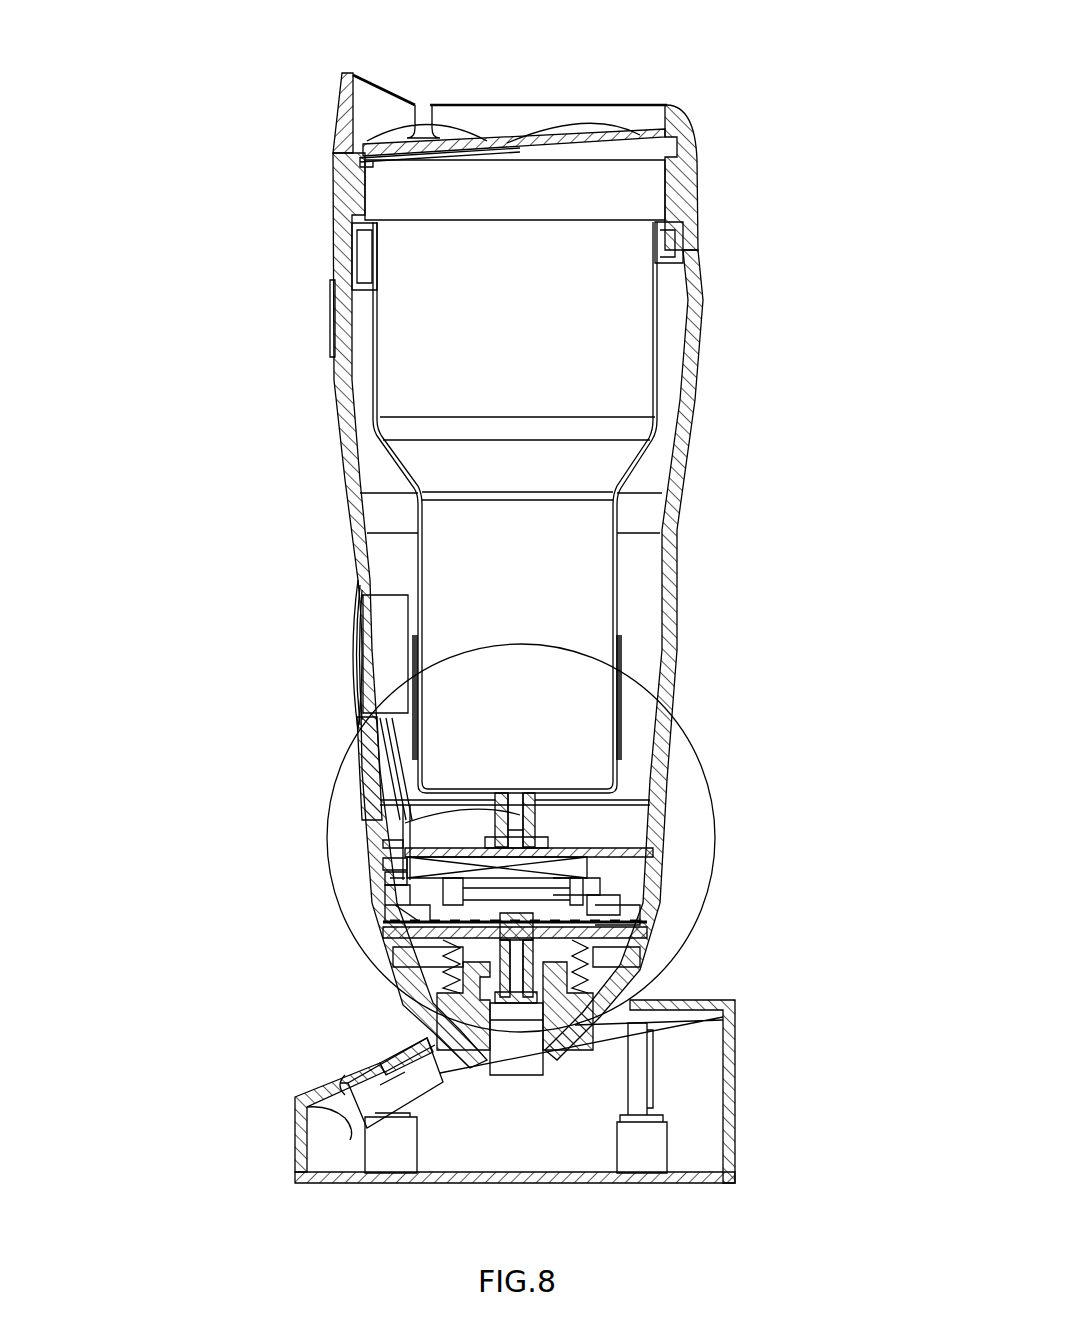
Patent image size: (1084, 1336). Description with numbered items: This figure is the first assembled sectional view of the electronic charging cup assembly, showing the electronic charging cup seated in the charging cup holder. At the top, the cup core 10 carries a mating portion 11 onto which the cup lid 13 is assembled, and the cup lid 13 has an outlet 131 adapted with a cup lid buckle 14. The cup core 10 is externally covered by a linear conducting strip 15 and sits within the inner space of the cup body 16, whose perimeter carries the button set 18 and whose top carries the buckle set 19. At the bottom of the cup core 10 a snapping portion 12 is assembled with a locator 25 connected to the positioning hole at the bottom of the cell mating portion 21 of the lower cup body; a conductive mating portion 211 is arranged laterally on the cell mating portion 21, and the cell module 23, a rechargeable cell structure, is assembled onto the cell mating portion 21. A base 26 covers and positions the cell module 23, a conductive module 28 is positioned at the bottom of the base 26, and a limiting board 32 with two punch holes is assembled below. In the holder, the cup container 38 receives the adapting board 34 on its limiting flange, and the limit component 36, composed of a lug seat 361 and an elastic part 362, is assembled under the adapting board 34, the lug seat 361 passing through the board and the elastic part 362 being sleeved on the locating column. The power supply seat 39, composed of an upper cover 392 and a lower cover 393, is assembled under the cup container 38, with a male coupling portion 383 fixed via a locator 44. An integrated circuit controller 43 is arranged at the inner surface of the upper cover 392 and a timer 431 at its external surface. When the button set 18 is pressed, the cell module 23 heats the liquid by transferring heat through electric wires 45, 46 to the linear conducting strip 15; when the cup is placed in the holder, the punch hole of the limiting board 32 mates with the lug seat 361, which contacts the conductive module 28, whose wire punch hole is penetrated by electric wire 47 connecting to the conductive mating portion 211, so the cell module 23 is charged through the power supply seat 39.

The cup core 10 is at (658, 298).
The mating portion 11 is at (700, 184).
The snapping portion 12 is at (600, 836).
The cup lid 13 is at (700, 140).
The outlet 131 is at (418, 103).
The cup lid buckle 14 is at (335, 145).
The linear conducting strip 15 is at (620, 645).
The cup body 16 is at (340, 395).
The button set 18 is at (353, 613).
The buckle set 19 is at (333, 235).
The cell mating portion 21 is at (610, 857).
The conductive mating portion 211 is at (400, 862).
The cell module 23 is at (610, 882).
The locator 25 is at (395, 833).
The base 26 is at (400, 880).
The conductive module 28 is at (625, 905).
The limiting board 32 is at (385, 930).
The adapting board 34 is at (440, 945).
The limit component 36 is at (305, 990).
The lug seat 361 is at (445, 978).
The elastic part 362 is at (470, 1003).
The cup container 38 is at (645, 935).
The male coupling portion 383 is at (450, 1043).
The power supply seat 39 is at (767, 1028).
The upper cover 392 is at (735, 1094).
The lower cover 393 is at (703, 1185).
The integrated circuit (IC) controller 43 is at (340, 1128).
The timer 431 is at (345, 1080).
The locator 44 is at (522, 1022).
The electric wire 45 is at (378, 738).
The electric wire 46 is at (388, 778).
The electric wire 47 is at (400, 915).